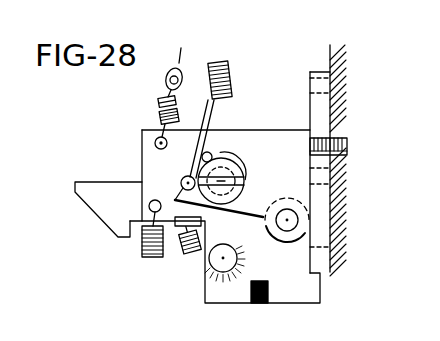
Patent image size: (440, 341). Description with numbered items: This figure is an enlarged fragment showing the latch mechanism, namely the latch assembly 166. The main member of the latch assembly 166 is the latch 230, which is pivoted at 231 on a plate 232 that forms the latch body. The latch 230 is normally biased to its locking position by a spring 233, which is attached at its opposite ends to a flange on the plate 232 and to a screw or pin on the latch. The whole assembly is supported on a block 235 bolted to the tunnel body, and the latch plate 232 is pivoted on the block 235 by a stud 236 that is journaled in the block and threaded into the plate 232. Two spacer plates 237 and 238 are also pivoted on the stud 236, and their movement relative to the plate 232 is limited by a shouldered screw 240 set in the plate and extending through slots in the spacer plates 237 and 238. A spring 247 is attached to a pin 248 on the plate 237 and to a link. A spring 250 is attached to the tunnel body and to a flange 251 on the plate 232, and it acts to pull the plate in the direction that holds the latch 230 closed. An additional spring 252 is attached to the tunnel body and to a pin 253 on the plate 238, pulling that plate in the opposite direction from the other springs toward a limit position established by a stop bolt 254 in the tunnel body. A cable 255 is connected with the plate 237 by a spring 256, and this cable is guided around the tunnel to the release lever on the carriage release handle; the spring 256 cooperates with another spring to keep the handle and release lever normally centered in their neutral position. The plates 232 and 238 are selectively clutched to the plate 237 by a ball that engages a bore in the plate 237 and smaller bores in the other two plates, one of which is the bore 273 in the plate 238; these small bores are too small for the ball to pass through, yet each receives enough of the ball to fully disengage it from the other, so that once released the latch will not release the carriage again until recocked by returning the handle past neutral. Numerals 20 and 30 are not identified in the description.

The frame wall 20 is at (345, 162).
The pivot pin 30 is at (211, 154).
The latch assembly 166 is at (77, 209).
The latch 230 is at (101, 209).
The pivot 231 is at (220, 259).
The plate 232 is at (299, 290).
The spring 233 is at (250, 304).
The block 235 is at (322, 206).
The stud 236 is at (289, 221).
The spacer plate 237 is at (141, 130).
The spacer plate 238 is at (300, 135).
The shouldered screw 240 is at (243, 186).
The spring 247 is at (141, 246).
The pin 248 is at (150, 202).
The spring 250 is at (180, 250).
The flange 251 is at (197, 217).
The spring 252 is at (234, 80).
The pin 253 is at (184, 178).
The stop bolt 254 is at (347, 151).
The cable 255 is at (181, 49).
The spring 256 is at (158, 102).
The bore 273 is at (210, 140).